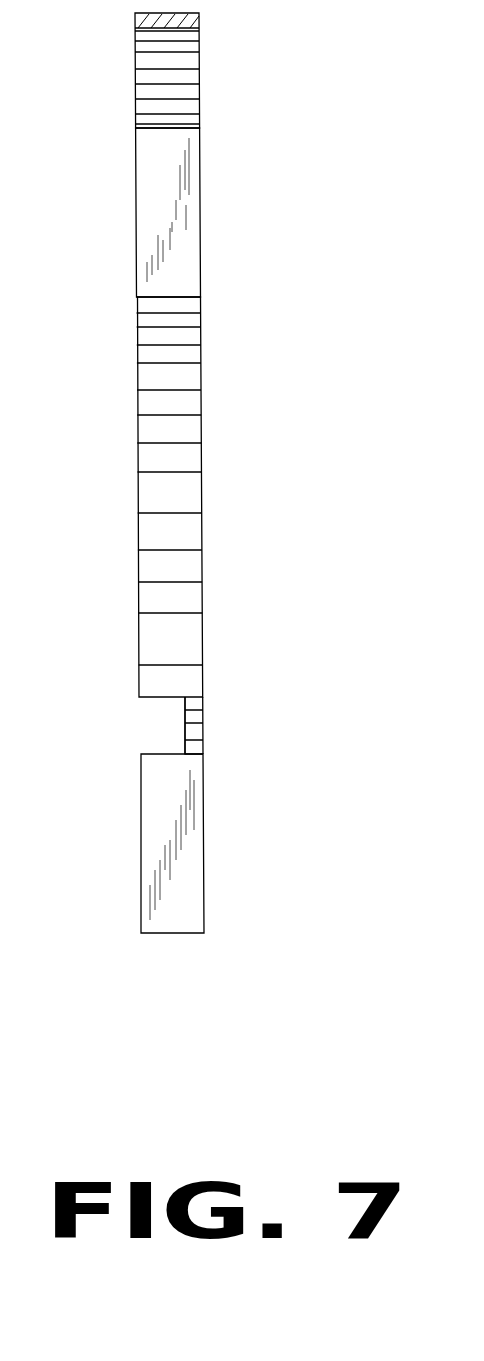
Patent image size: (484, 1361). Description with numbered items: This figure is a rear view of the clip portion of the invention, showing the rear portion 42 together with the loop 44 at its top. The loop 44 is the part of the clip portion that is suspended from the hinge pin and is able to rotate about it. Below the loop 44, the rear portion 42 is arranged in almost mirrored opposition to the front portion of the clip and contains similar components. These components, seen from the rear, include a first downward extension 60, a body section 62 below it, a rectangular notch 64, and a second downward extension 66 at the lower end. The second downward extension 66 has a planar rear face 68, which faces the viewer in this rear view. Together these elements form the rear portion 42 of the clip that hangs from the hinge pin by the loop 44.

The rear portion 42 is at (276, 499).
The loop 44 is at (199, 55).
The first downward extension 60 is at (200, 217).
The body section 62 is at (201, 435).
The rectangular notch 64 is at (172, 718).
The second downward extension 66 is at (204, 785).
The planar rear face 68 is at (179, 880).